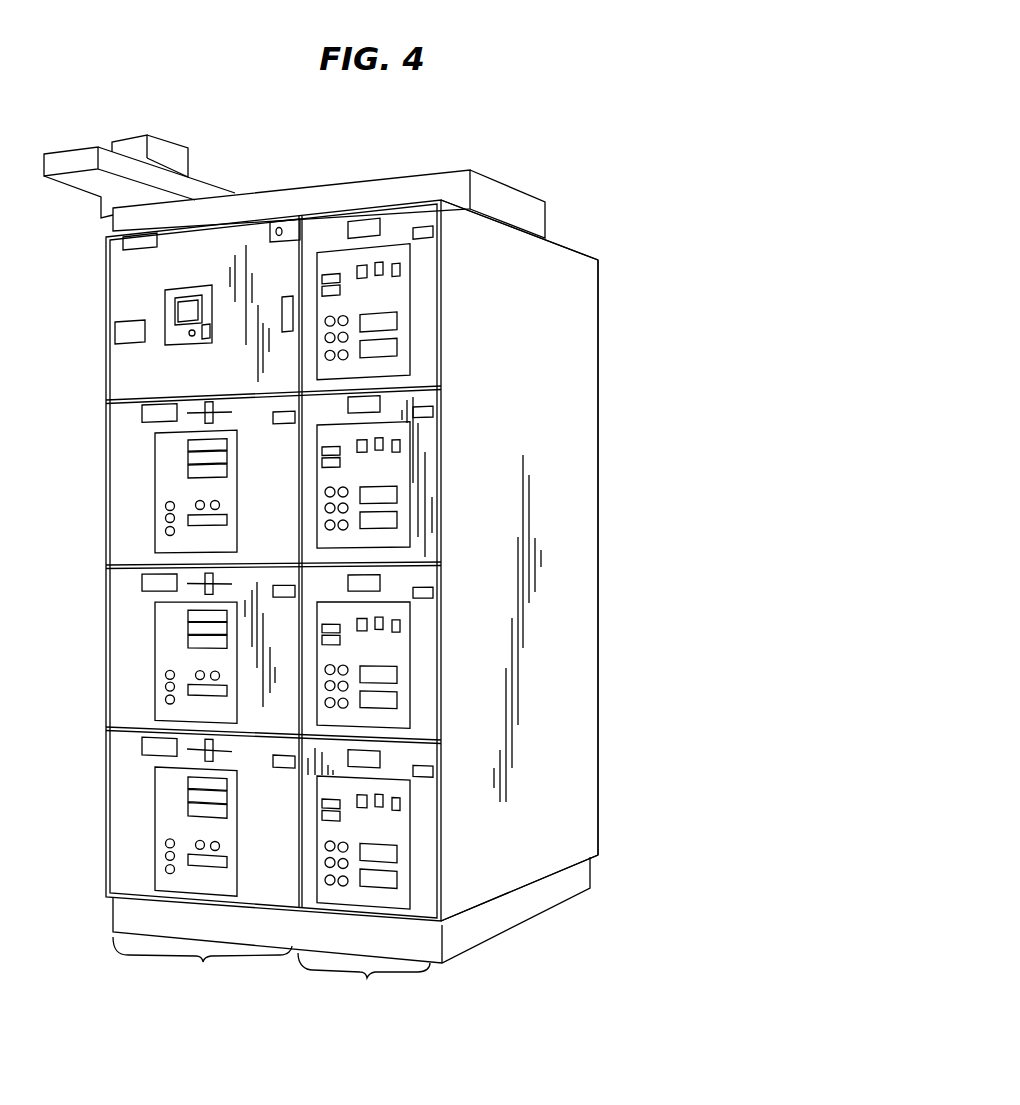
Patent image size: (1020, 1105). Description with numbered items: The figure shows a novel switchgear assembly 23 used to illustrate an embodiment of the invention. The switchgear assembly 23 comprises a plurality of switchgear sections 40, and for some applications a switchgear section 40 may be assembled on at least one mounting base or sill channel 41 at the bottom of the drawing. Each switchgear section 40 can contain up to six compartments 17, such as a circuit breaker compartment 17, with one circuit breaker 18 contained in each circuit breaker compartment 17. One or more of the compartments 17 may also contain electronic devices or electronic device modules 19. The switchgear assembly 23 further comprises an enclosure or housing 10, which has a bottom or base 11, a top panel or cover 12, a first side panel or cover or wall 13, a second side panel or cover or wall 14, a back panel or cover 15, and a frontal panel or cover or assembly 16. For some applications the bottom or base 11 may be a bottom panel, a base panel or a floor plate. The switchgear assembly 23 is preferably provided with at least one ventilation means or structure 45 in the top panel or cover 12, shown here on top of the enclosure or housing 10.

The switchgear assembly 23 is at (636, 108).
The ventilation means or structure 45 is at (499, 184).
The top panel or cover 12 is at (578, 244).
The enclosure or housing 10 is at (600, 325).
The electronic device module 19 is at (130, 292).
The first side panel or cover or wall 13 is at (106, 322).
The second side panel or cover or wall 14 is at (580, 510).
The compartment 17 is at (142, 487).
The back panel or cover 15 is at (598, 576).
The frontal panel or cover or assembly 16 is at (173, 648).
The circuit breaker 18 is at (153, 665).
The bottom or base 11 is at (598, 856).
The switchgear section 40 is at (271, 974).
The mounting base or sill channel 41 is at (532, 954).